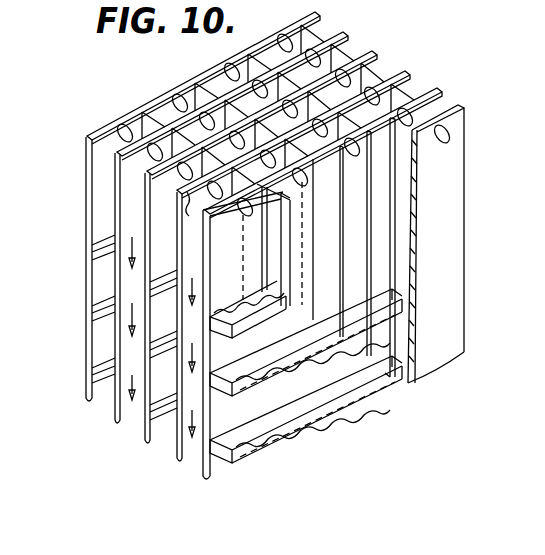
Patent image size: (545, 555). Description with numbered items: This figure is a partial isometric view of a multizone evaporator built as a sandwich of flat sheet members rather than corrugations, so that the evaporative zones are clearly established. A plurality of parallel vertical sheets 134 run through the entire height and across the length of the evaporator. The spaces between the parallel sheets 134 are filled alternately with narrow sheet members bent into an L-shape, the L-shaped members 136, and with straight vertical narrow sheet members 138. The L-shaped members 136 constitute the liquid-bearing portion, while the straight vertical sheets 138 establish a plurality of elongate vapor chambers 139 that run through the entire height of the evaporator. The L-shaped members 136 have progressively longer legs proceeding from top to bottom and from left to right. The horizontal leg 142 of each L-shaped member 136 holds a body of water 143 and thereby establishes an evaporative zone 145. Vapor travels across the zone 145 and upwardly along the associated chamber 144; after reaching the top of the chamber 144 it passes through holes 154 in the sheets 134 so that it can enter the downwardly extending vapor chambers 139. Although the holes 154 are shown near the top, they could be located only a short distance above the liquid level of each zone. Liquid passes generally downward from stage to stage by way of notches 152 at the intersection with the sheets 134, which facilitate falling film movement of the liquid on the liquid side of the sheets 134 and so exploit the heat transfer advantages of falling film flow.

The elongate vapor chambers 139 is at (142, 160).
The straight vertical narrow sheet members 138 is at (360, 72).
The parallel vertical sheets 134 is at (436, 89).
The holes 154 is at (302, 183).
The chamber 144 is at (329, 223).
The L-shaped sheet member 136 is at (408, 294).
The evaporative zone 145 is at (297, 357).
The horizontal leg 142 is at (356, 392).
The body of water 143 is at (283, 430).
The notches 152 is at (258, 336).